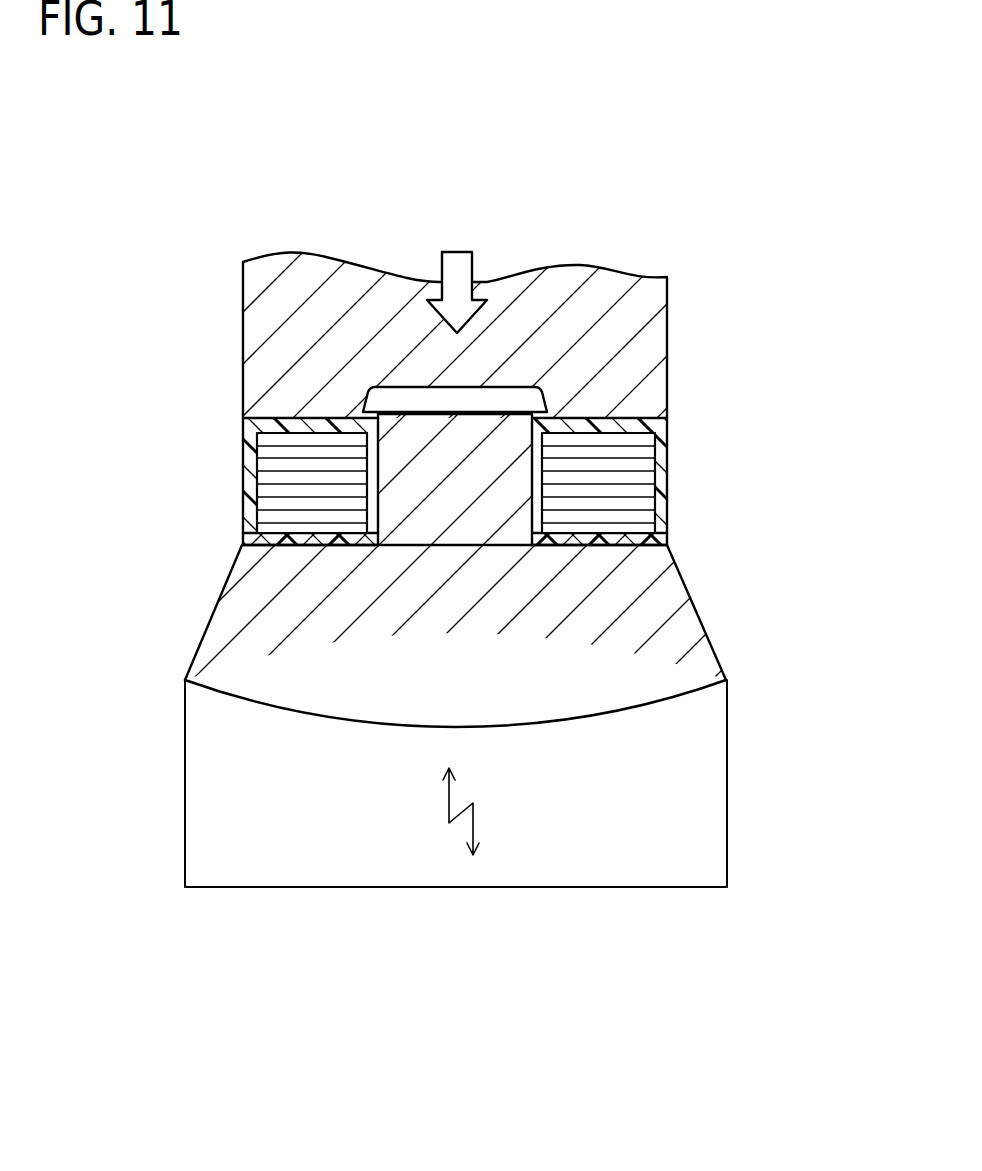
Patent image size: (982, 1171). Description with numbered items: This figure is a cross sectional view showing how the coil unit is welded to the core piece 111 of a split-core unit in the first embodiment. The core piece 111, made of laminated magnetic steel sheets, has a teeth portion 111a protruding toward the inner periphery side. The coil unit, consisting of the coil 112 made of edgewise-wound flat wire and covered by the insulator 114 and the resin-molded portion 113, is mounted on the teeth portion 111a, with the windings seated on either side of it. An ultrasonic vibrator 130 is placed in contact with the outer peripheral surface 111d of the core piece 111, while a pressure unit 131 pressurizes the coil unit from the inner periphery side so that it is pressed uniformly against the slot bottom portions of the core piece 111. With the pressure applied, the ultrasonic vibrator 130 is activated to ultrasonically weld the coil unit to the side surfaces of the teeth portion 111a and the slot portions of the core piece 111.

The pressure unit 131 is at (607, 282).
The teeth portion 111a is at (464, 438).
The coil 112 is at (637, 452).
The resin-molded portion 113 is at (658, 483).
The insulator 114 is at (647, 538).
The core piece 111 is at (491, 542).
The outer peripheral surface 111d is at (618, 713).
The ultrasonic vibrator 130 is at (620, 862).